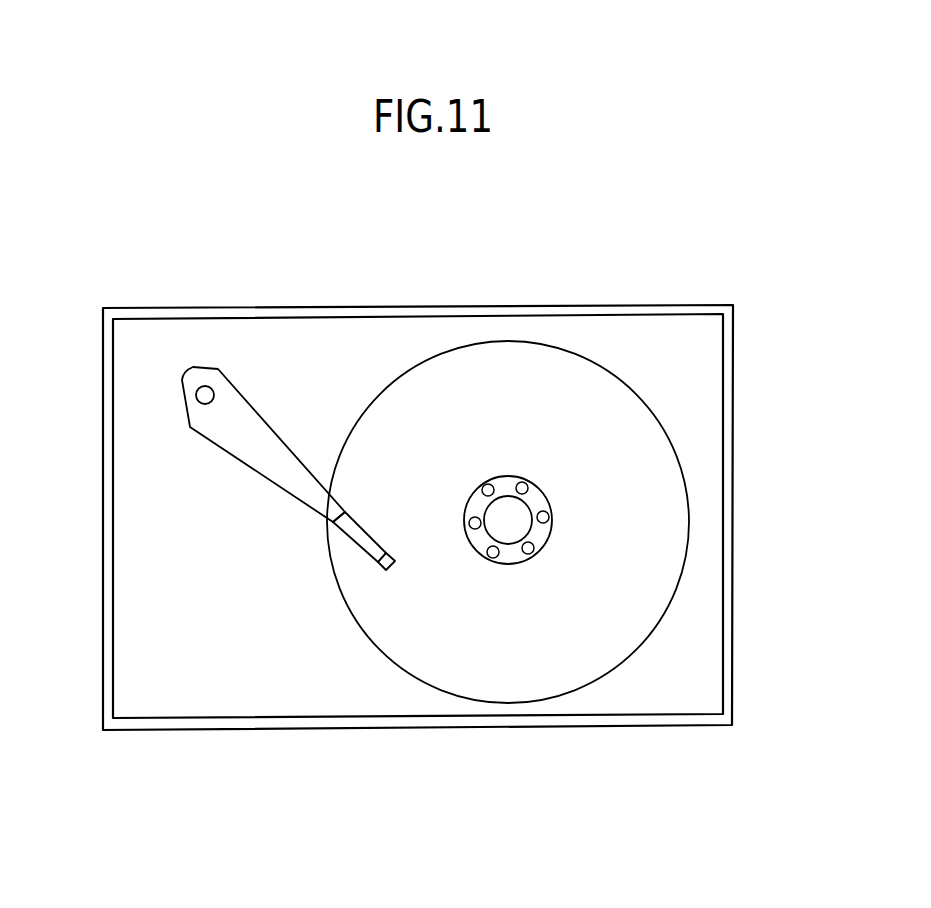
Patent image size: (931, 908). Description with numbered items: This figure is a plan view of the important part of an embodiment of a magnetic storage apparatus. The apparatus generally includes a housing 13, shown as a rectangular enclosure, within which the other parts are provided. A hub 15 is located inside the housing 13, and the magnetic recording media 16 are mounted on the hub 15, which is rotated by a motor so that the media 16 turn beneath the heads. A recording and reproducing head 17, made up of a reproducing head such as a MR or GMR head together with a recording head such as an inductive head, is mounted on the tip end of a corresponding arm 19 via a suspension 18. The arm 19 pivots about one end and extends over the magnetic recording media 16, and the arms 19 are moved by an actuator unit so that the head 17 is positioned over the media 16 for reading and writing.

The housing 13 is at (728, 707).
The hub 15 is at (540, 497).
The magnetic recording medium 16 is at (558, 355).
The recording and reproducing head 17 is at (391, 553).
The suspension 18 is at (360, 522).
The arm 19 is at (237, 458).